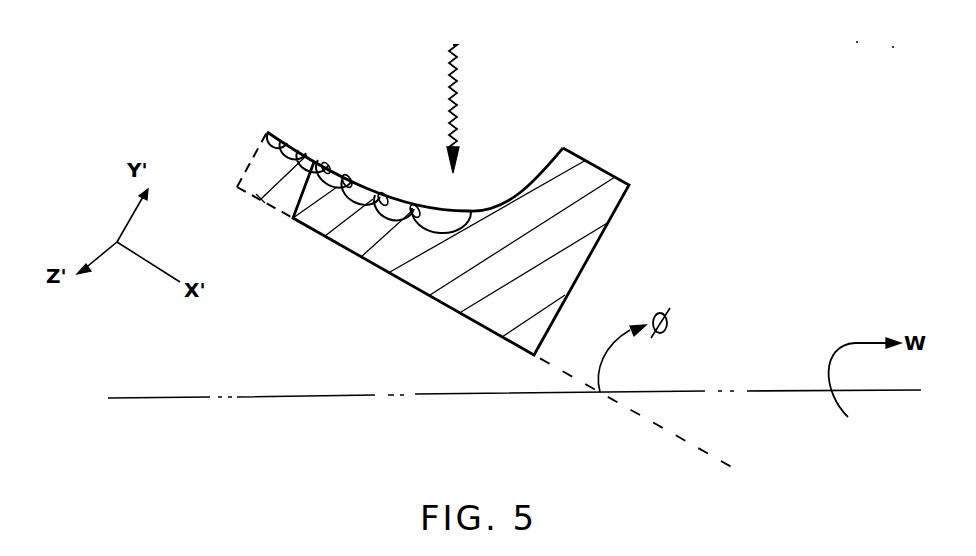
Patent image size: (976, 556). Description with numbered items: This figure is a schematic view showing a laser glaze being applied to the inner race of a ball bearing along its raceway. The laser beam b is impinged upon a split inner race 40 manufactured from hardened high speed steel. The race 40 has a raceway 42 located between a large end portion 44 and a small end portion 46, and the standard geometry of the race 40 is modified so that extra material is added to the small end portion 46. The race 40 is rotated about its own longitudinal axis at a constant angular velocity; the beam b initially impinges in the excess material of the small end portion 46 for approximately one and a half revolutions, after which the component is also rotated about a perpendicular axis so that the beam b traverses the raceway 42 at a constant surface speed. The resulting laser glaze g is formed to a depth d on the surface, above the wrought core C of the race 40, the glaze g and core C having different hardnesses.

The split inner race 40 is at (606, 244).
The raceway 42 is at (518, 197).
The large end portion 44 is at (588, 182).
The small end portion 46 is at (258, 157).
The laser glaze g is at (363, 200).
The laser beam b is at (460, 106).
The depth d is at (239, 230).
The wrought core C is at (452, 276).